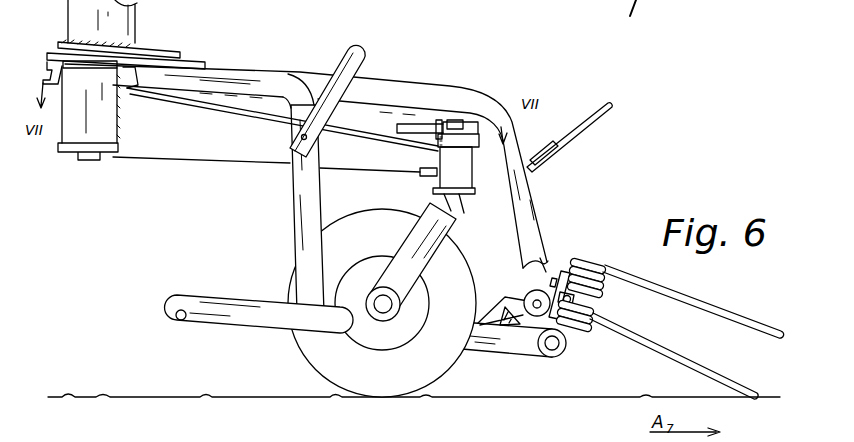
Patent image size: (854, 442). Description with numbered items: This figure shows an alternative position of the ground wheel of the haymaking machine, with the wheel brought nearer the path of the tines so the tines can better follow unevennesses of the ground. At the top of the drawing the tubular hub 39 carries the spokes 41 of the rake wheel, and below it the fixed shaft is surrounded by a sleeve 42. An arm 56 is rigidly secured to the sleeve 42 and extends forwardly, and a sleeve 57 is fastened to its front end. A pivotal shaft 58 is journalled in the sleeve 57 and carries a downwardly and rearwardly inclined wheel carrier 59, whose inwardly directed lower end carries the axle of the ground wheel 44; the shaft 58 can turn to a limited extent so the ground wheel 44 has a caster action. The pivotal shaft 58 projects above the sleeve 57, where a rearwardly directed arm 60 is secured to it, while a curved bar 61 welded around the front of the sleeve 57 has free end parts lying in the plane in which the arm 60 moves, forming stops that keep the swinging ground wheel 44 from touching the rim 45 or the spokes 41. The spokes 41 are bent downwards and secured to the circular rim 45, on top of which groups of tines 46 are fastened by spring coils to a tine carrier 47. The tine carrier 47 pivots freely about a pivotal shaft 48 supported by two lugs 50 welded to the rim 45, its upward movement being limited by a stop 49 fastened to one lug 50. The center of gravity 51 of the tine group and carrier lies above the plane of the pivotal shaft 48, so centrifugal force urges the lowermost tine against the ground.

The tubular hub 39 is at (128, 25).
The spokes 41 is at (250, 77).
The sleeve 42 is at (100, 122).
The ground wheel 44 is at (303, 350).
The rim 45 is at (213, 267).
The group of tines 46 is at (768, 290).
The tine carrier 47 is at (559, 270).
The pivotal shaft 48 is at (536, 291).
The stop 49 is at (480, 306).
The lugs 50 is at (470, 335).
The center of gravity 51 is at (603, 305).
The arm 56 is at (197, 138).
The sleeve 57 is at (440, 173).
The pivotal shaft 58 is at (457, 198).
The wheel carrier 59 is at (413, 255).
The arm 60 is at (410, 125).
The curved bar 61 is at (437, 140).